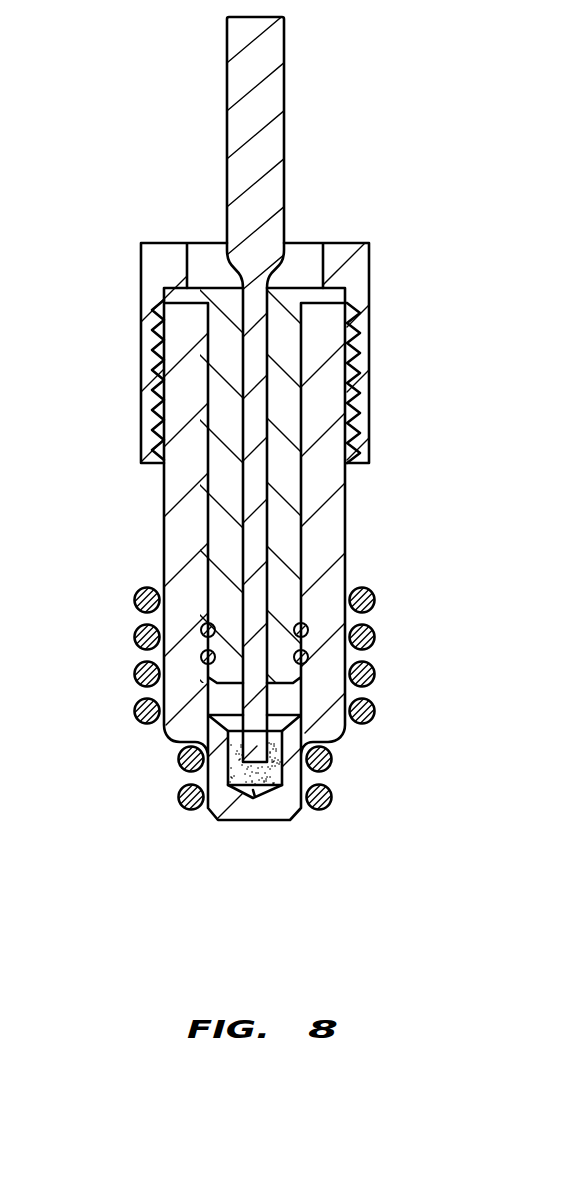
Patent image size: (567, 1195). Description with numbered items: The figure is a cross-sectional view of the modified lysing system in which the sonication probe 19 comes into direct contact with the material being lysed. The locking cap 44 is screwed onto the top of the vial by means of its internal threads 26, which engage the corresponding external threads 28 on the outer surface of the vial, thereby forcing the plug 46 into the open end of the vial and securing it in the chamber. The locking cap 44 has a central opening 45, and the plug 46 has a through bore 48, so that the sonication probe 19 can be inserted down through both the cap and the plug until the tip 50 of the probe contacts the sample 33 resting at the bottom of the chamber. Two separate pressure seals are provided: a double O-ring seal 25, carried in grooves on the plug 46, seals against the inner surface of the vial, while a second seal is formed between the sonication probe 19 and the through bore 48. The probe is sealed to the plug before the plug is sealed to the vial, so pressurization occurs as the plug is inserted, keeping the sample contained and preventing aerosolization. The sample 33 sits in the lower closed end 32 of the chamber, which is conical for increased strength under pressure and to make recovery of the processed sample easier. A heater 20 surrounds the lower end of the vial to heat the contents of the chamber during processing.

The central opening 45 is at (320, 263).
The locking cap 44 is at (370, 353).
The internal threads 26 is at (152, 405).
The external threads 28 is at (214, 385).
The sonication probe 19 is at (253, 502).
The plug 46 is at (287, 548).
The through bore 48 is at (247, 530).
The sample 33 is at (212, 757).
The heater 20 is at (374, 596).
The O-ring seals 25 is at (307, 659).
The tip 50 is at (253, 768).
The lower closed end 32 is at (253, 798).